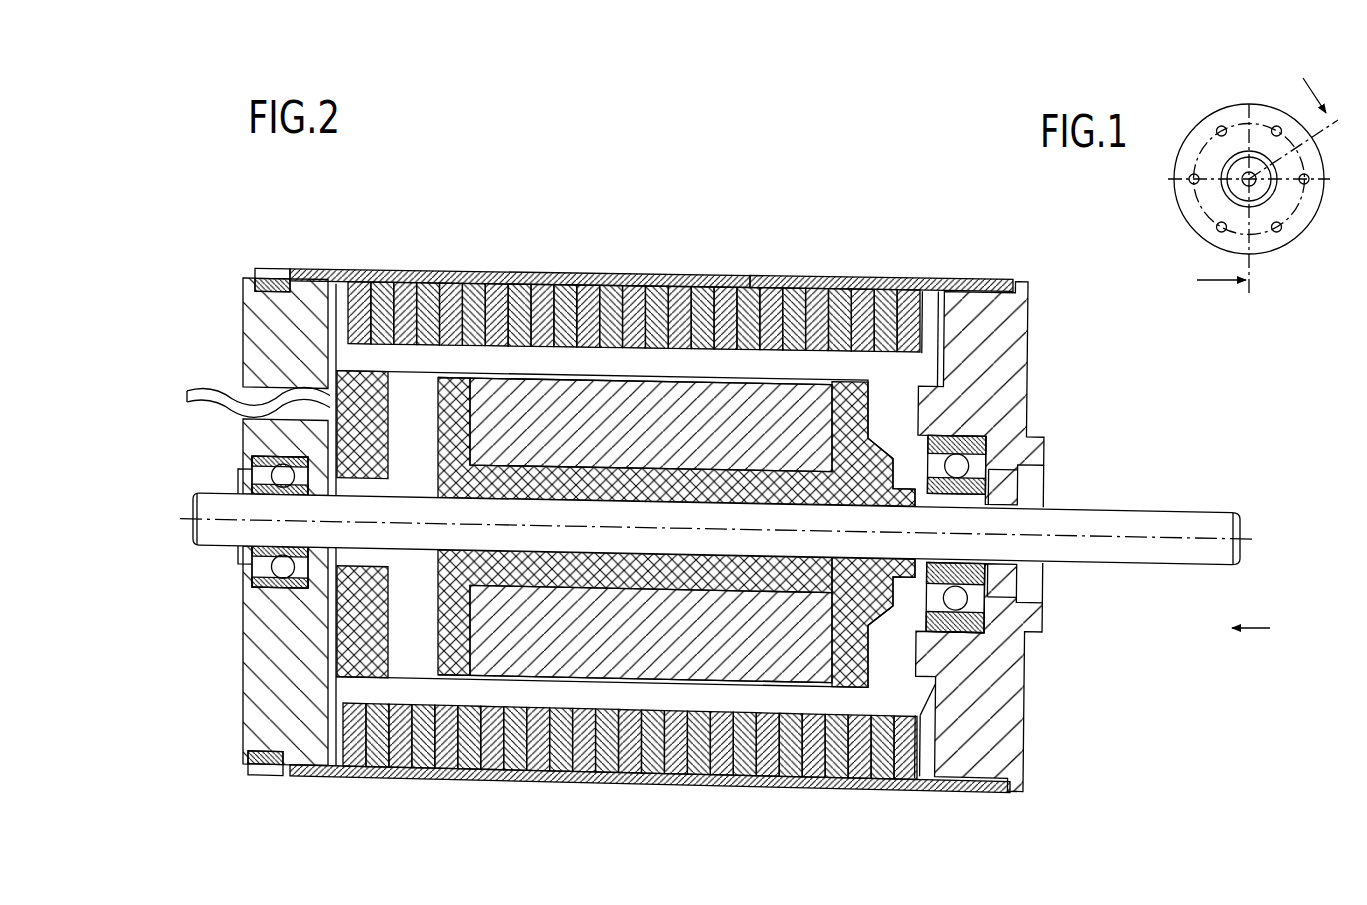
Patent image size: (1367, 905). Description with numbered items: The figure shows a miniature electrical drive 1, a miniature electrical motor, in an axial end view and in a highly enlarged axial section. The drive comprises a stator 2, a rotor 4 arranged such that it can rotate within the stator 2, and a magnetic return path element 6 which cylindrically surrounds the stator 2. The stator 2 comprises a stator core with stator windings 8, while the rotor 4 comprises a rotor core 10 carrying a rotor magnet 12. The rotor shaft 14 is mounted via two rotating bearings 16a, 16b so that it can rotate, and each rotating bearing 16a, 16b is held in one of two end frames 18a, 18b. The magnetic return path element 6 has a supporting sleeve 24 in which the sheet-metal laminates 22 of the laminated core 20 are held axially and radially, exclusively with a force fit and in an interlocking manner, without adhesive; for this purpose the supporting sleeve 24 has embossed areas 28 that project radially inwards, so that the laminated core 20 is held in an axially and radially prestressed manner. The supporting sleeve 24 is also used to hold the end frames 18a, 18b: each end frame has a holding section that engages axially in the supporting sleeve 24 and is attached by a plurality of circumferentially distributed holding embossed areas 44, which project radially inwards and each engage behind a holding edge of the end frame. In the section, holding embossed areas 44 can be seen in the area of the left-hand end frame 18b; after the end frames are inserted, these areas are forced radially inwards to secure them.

In FIG. 2, the miniature electrical drive 1 is at (732, 512).
In FIG. 1, the miniature electrical drive 1 is at (1210, 196).
In FIG. 2, the stator 2 is at (364, 357).
In FIG. 2, the rotor 4 is at (872, 673).
In FIG. 2, the magnetic return path element 6 is at (640, 272).
In FIG. 2, the stator windings 8 is at (855, 366).
In FIG. 2, the rotor core 10 is at (847, 665).
In FIG. 2, the rotor magnet 12 is at (770, 620).
In FIG. 2, the rotor shaft 14 is at (1102, 527).
In FIG. 1, the rotor shaft 14 is at (1246, 176).
In FIG. 2, the rotating bearing 16a is at (960, 598).
In FIG. 2, the rotating bearing 16b is at (282, 567).
In FIG. 2, the end frame 18a is at (978, 356).
In FIG. 1, the end frame 18a is at (1300, 217).
In FIG. 2, the end frame 18b is at (277, 650).
In FIG. 2, the laminated core 20 is at (800, 327).
In FIG. 2, the sheet-metal laminates 22 is at (546, 298).
In FIG. 2, the supporting sleeve 24 is at (862, 278).
In FIG. 2, the embossed areas 28 is at (271, 265).
In FIG. 2, the holding embossed areas 44 is at (280, 278).